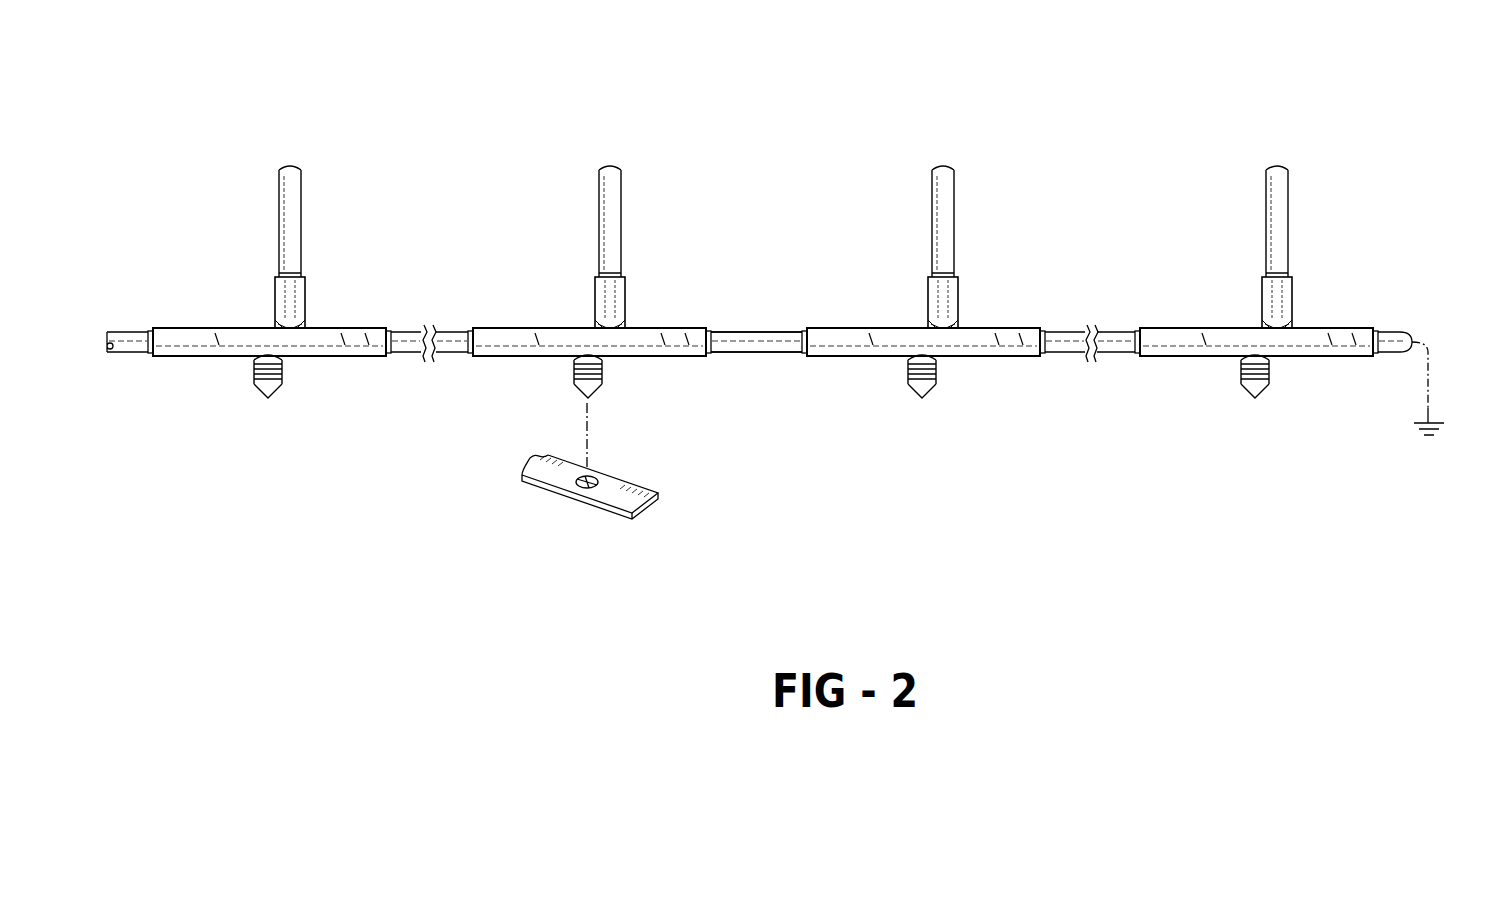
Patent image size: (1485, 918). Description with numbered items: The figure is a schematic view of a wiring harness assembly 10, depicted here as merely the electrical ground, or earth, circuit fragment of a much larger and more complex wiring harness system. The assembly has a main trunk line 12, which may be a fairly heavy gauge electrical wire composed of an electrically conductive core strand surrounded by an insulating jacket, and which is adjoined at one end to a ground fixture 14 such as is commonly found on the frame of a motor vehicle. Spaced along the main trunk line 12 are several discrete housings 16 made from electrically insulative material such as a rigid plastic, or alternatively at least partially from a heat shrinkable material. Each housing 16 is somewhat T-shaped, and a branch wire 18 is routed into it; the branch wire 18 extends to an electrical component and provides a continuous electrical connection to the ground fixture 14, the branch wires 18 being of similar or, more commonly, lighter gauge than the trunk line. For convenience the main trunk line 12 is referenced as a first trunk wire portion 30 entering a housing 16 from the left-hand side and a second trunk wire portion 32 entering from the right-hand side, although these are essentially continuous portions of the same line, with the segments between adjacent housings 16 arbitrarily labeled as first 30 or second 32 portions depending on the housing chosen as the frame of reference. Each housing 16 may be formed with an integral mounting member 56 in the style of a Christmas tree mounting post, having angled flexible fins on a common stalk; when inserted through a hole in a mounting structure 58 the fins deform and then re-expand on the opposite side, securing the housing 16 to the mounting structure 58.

The wiring harness assembly 10 is at (1038, 66).
The main trunk line 12 is at (754, 330).
The ground fixture 14 is at (1432, 398).
The housing 16 is at (318, 364).
The branch wire 18 is at (301, 194).
The first trunk wire portion 30 is at (128, 332).
The second trunk wire portion 32 is at (395, 332).
The mounting member 56 is at (253, 384).
The mounting structure 58 is at (553, 491).